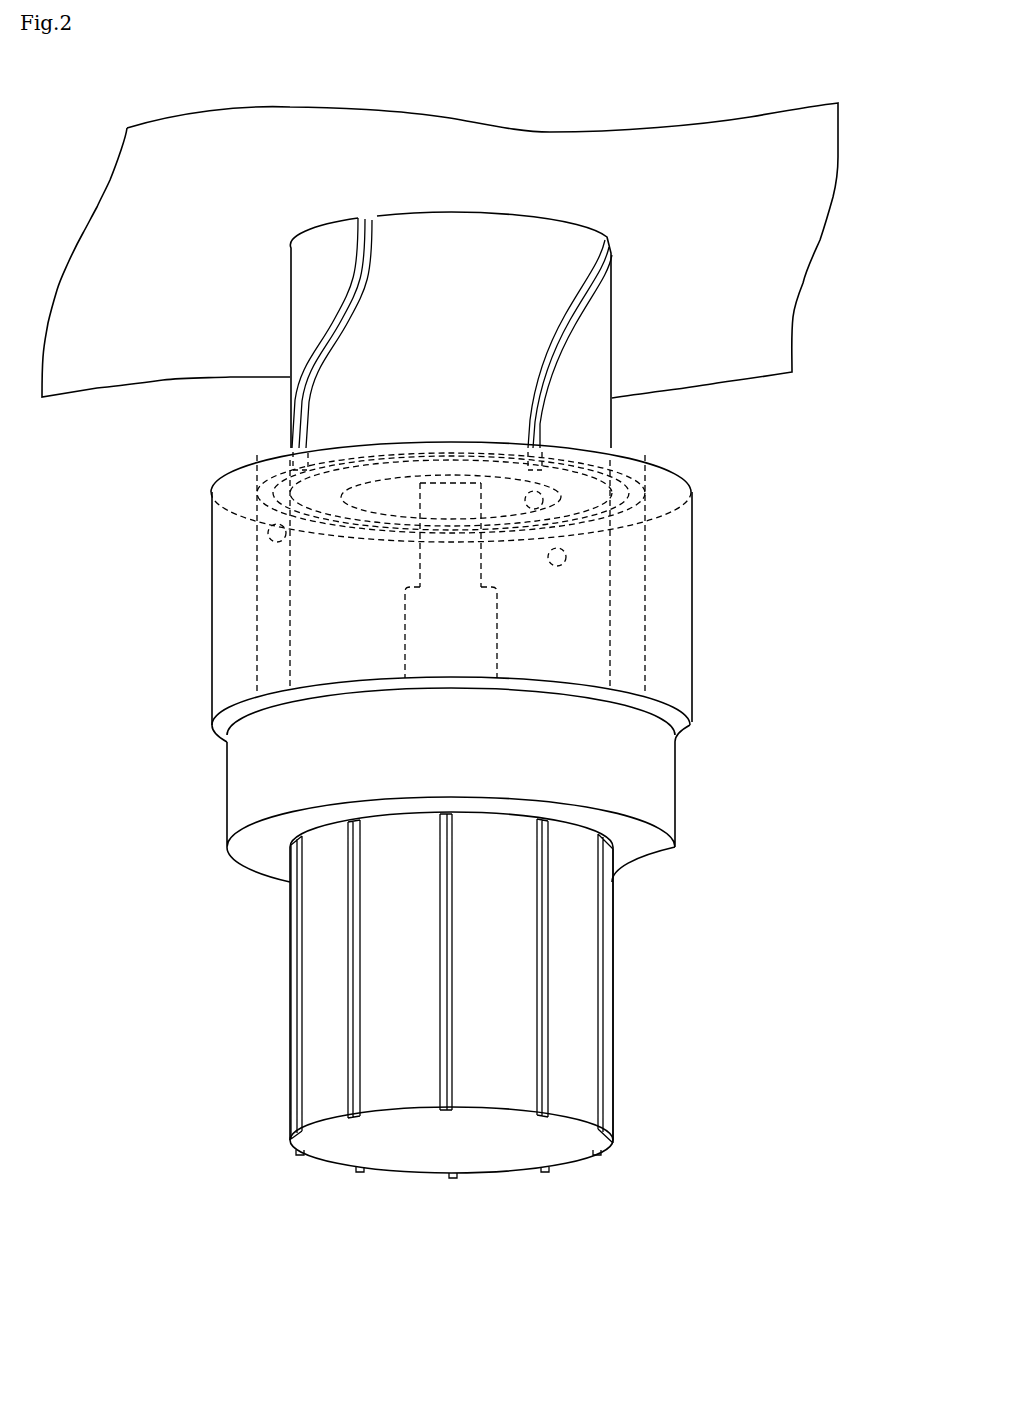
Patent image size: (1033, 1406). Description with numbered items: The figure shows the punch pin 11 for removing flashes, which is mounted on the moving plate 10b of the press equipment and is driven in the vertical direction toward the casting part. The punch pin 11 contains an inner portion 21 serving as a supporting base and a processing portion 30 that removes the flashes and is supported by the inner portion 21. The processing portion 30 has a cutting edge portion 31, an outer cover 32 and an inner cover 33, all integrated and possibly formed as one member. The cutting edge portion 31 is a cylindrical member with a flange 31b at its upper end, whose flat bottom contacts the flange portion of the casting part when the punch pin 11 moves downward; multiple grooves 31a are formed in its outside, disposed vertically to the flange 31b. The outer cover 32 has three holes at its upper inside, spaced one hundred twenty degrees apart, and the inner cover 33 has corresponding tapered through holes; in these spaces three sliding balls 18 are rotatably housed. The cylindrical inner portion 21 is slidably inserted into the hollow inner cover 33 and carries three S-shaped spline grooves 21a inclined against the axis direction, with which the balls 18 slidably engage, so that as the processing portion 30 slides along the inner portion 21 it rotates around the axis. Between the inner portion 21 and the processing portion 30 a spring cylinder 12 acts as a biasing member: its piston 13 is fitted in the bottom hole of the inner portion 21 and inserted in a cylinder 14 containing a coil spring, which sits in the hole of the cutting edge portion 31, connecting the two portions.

The moving plate 10b is at (722, 243).
The inner portion 21 is at (455, 451).
The spline grooves 21a is at (302, 397).
The sliding balls 18 is at (648, 481).
The spring cylinder 12 is at (292, 585).
The piston 13 is at (437, 555).
The cylinder 14 is at (438, 630).
The processing portion 30 is at (445, 833).
The outer cover 32 is at (660, 655).
The inner cover 33 is at (628, 598).
The cutting edge portion 31 is at (486, 1022).
The grooves 31a is at (447, 1012).
The flange 31b is at (263, 855).
The punch pin 11 is at (445, 833).